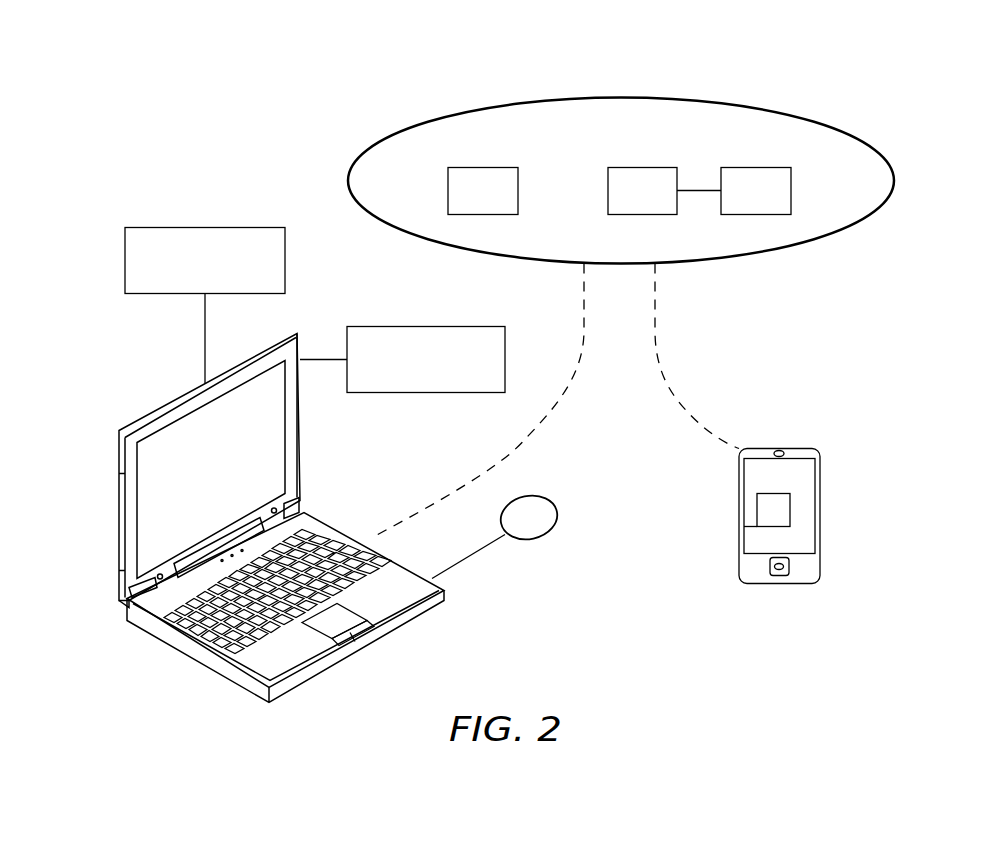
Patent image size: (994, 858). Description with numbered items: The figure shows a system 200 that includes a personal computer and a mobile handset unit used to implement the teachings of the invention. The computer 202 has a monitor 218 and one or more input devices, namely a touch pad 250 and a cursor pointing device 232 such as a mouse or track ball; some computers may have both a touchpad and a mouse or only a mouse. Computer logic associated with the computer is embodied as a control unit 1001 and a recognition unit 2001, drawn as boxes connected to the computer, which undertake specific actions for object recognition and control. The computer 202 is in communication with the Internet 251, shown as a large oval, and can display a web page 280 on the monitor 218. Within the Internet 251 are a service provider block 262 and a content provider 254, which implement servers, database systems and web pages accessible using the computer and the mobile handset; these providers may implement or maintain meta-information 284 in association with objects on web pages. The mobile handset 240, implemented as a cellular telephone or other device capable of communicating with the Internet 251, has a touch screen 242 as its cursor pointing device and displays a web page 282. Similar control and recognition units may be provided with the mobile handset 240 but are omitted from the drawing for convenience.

The system 200 is at (231, 101).
The control unit 1001 is at (203, 227).
The recognition unit 2001 is at (420, 392).
The computer 202 is at (188, 661).
The monitor 218 is at (117, 458).
The web page 280 is at (150, 498).
The touch pad 250 is at (340, 615).
The cursor pointing device 232 is at (528, 510).
The Internet 251 is at (773, 251).
The ISP 262 is at (446, 190).
The content providers 254 is at (606, 190).
The meta-information 284 is at (789, 190).
The mobile handset 240 is at (736, 514).
The touch screen 242 is at (797, 448).
The web page 282 is at (788, 508).